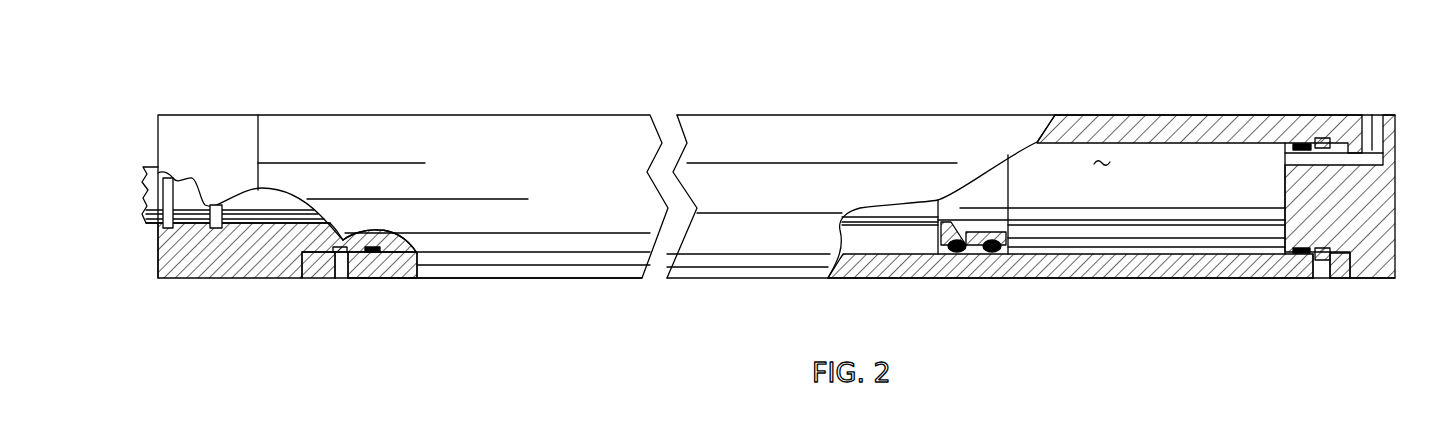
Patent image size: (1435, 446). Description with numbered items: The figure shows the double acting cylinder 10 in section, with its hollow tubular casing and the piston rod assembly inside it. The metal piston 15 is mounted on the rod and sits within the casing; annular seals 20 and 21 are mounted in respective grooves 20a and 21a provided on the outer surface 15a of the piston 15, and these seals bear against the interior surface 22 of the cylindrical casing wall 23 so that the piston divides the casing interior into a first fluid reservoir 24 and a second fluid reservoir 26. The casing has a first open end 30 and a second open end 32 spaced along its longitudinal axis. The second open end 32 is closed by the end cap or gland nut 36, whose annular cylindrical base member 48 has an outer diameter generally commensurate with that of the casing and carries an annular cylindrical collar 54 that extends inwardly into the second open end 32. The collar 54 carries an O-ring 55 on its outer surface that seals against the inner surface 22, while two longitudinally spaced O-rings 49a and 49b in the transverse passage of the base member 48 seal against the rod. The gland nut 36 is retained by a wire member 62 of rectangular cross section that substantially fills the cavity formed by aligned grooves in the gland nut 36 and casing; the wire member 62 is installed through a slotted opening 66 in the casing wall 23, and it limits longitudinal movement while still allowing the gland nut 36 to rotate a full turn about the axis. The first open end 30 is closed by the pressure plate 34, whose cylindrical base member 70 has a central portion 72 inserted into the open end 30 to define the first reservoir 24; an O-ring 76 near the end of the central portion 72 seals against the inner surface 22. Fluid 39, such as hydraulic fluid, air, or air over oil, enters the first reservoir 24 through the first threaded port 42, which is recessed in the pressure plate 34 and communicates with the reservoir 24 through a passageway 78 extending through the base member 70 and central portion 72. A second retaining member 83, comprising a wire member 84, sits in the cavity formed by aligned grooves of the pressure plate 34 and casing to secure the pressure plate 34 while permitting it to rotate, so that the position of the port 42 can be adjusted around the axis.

The double acting cylinder 10 is at (1146, 88).
The piston 15 is at (1000, 190).
The outer surface of piston 15a is at (1012, 256).
The annular seal 20 is at (957, 256).
The groove 20a is at (932, 222).
The annular seal 21 is at (992, 256).
The groove 21a is at (955, 245).
The interior surface 22 is at (1063, 242).
The cylindrical casing wall 23 is at (1230, 117).
The first fluid reservoir 24 is at (1133, 230).
The second fluid reservoir 26 is at (900, 238).
The first open end 30 is at (1365, 280).
The second open end 32 is at (252, 125).
The pressure plate 34 is at (1347, 286).
The gland nut 36 is at (202, 130).
The fluid 39 is at (1178, 166).
The first threaded port 42 is at (1370, 117).
The cylindrical base member 48 is at (262, 258).
The annular seal 49a is at (171, 228).
The annular seal 49b is at (221, 228).
The annular cylindrical collar 54 is at (312, 235).
The annular seal 55 is at (385, 253).
The wire member 62 is at (318, 265).
The slotted opening 66 is at (341, 263).
The cylindrical base member 70 is at (1382, 180).
The central portion 72 is at (1285, 212).
The annular seal 76 is at (1298, 143).
The passageway 78 is at (1285, 178).
The second retaining member 83 is at (1322, 286).
The wire member 84 is at (1297, 262).